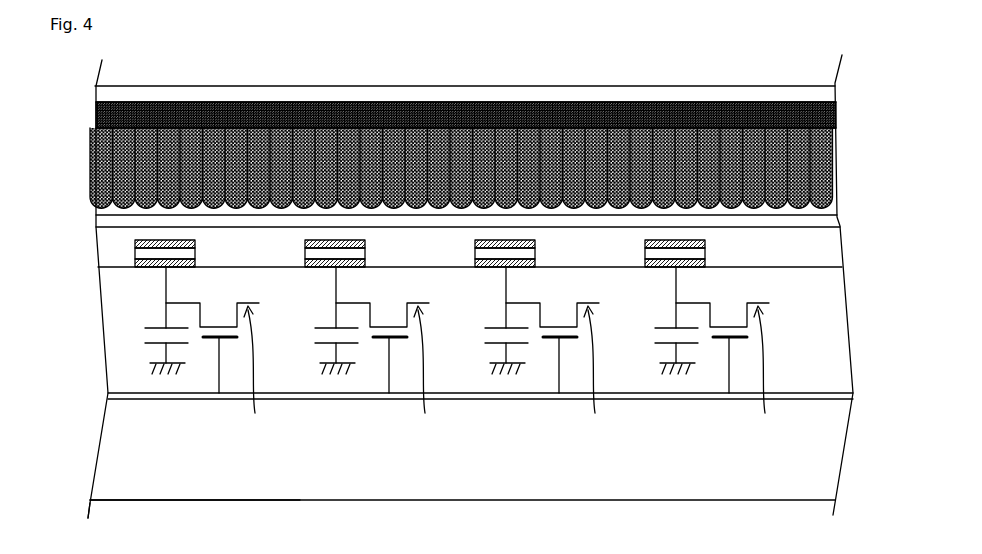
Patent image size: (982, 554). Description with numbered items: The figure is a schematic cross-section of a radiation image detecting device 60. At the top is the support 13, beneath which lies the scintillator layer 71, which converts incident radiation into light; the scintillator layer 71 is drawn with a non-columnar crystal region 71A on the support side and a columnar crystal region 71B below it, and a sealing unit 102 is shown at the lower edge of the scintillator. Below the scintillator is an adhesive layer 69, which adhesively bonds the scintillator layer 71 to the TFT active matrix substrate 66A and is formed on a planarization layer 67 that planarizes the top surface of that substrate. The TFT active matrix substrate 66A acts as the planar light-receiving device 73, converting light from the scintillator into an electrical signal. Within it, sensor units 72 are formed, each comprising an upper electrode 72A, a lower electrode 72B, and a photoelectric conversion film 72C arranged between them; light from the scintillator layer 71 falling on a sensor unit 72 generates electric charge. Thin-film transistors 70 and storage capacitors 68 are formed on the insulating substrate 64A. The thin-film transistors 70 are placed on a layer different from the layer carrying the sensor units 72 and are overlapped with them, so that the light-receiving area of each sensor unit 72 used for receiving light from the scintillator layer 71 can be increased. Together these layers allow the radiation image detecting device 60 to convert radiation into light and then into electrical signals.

The support 13 is at (823, 95).
The scintillator layer 71 is at (506, 155).
The non-columnar crystal region 71A is at (838, 112).
The columnar crystal region 71B is at (823, 149).
The sealing unit 102 is at (837, 193).
The adhesive layer 69 is at (838, 218).
The planarization layer 67 is at (115, 250).
The sensor unit 72 is at (467, 260).
The upper electrode 72A is at (448, 238).
The photoelectric conversion film 72C is at (448, 255).
The lower electrode 72B is at (448, 276).
The storage capacitor 68 is at (453, 330).
The thin-film transistor (TFT) 70 is at (511, 372).
The TFT active matrix substrate 66A is at (500, 361).
The planar light-receiving device 73 is at (500, 441).
The insulating substrate 64A is at (130, 447).
The radiation image detecting device 60 is at (501, 286).